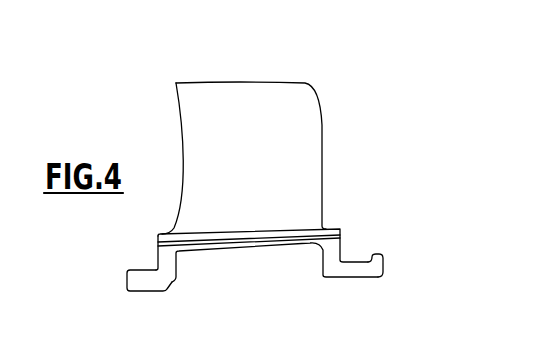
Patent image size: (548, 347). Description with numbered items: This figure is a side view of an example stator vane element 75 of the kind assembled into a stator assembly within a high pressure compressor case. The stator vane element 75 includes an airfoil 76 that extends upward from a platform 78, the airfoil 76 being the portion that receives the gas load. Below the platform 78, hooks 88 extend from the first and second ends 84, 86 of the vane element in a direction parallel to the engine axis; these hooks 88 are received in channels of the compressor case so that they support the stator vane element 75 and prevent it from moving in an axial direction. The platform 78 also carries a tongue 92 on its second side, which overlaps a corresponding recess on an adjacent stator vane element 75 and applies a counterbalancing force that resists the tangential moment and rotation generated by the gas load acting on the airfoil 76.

The stator vane element 75 is at (378, 119).
The airfoil 76 is at (308, 157).
The platform 78 is at (316, 219).
The first end 84 is at (392, 275).
The second end 86 is at (112, 291).
The hook 88 is at (145, 279).
The tongue 92 is at (340, 230).